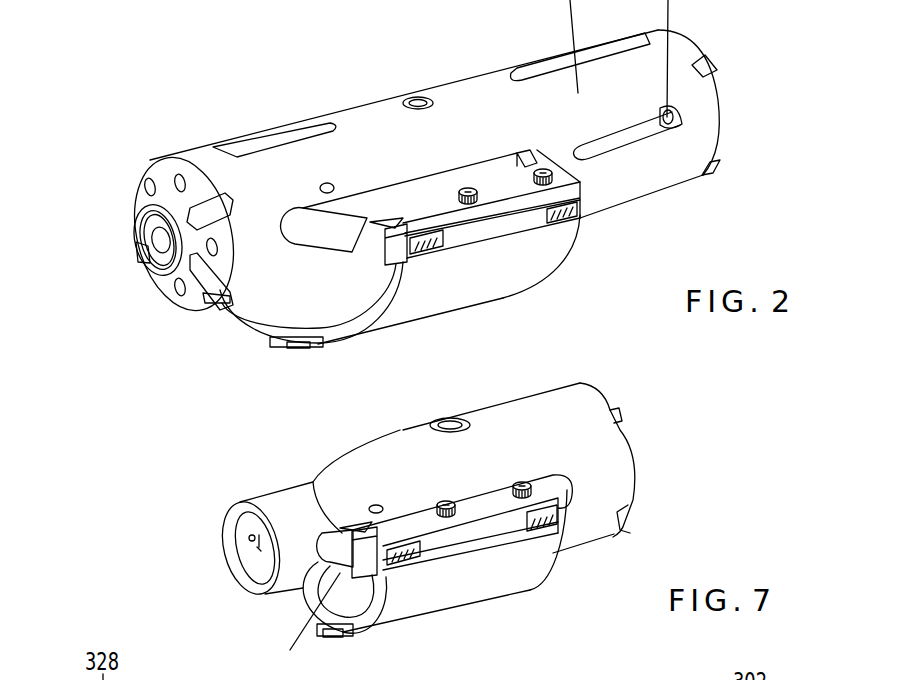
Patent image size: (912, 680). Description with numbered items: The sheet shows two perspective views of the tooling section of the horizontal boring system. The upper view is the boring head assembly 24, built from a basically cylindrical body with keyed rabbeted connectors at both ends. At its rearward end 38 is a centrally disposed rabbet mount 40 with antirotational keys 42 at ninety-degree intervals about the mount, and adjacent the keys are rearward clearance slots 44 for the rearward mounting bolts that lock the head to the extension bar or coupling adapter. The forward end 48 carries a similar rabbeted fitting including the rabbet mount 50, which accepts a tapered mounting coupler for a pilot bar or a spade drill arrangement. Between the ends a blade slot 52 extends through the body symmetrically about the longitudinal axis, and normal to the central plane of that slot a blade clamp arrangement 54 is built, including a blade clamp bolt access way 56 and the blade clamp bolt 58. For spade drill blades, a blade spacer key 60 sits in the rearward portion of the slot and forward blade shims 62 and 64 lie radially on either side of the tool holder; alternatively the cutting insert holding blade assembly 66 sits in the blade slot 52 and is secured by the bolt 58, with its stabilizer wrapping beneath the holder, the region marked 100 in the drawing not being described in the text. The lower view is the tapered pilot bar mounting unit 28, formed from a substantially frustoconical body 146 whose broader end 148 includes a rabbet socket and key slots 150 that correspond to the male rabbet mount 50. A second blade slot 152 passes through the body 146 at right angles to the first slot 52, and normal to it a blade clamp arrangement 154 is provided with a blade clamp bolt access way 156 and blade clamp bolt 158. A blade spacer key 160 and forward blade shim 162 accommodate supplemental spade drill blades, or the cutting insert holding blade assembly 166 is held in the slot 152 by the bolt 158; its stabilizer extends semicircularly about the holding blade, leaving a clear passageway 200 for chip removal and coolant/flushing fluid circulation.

In FIG. 2, the boring head assembly 24 is at (643, 178).
In FIG. 2, the rearward end 38 is at (695, 43).
In FIG. 2, the rabbet mount 40 is at (720, 107).
In FIG. 2, the antirotational keys 42 is at (720, 164).
In FIG. 2, the rearward clearance slots 44 is at (617, 133).
In FIG. 2, the forward end 48 is at (143, 202).
In FIG. 2, the rabbet mount 50 is at (153, 233).
In FIG. 2, the blade slot 52 is at (230, 298).
In FIG. 2, the blade clamp arrangement 54 is at (420, 100).
In FIG. 2, the blade clamp bolt access way 56 is at (420, 100).
In FIG. 2, the blade clamp bolt 58 is at (393, 100).
In FIG. 2, the blade spacer key 60 is at (515, 160).
In FIG. 2, the forward blade shim 62 is at (375, 190).
In FIG. 2, the forward blade shim 64 is at (310, 247).
In FIG. 2, the cutting insert holding blade assembly 66 is at (528, 262).
In FIG. 2, the sleeve front portion 100 is at (357, 290).
In FIG. 7, the pilot bar mounting unit 28 is at (573, 410).
In FIG. 7, the frustoconical body 146 is at (570, 532).
In FIG. 7, the broader end 148 is at (635, 455).
In FIG. 7, the key slots 150 is at (617, 422).
In FIG. 7, the second blade slot 152 is at (323, 547).
In FIG. 7, the blade clamp arrangement 154 is at (447, 428).
In FIG. 7, the blade clamp bolt access way 156 is at (462, 420).
In FIG. 7, the blade clamp bolt 158 is at (443, 423).
In FIG. 7, the blade spacer key 160 is at (547, 487).
In FIG. 7, the forward blade shim 162 is at (367, 518).
In FIG. 7, the cutting insert holding blade assembly 166 is at (487, 570).
In FIG. 7, the passageway 200 is at (350, 597).